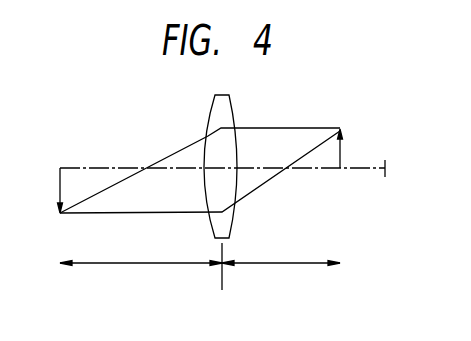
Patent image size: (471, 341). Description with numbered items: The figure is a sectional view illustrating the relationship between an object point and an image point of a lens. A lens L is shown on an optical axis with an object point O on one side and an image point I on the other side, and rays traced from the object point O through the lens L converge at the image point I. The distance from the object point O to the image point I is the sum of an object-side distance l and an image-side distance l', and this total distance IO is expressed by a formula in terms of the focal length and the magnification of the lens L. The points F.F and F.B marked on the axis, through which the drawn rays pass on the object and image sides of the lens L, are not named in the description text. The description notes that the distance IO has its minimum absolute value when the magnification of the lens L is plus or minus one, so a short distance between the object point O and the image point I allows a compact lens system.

The lens L is at (222, 110).
The object point O is at (61, 175).
The image point I is at (341, 163).
The front focal point F.F is at (155, 186).
The back focal point F.B is at (298, 185).
The object-side distance l is at (141, 274).
The image-side distance l' is at (281, 274).